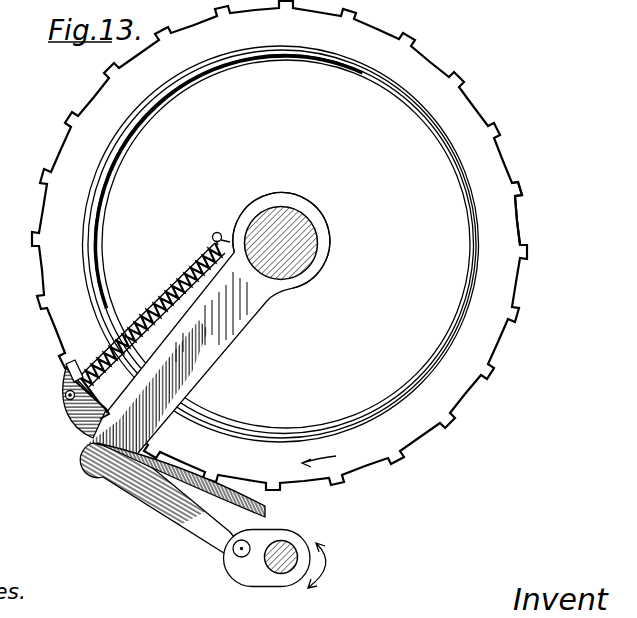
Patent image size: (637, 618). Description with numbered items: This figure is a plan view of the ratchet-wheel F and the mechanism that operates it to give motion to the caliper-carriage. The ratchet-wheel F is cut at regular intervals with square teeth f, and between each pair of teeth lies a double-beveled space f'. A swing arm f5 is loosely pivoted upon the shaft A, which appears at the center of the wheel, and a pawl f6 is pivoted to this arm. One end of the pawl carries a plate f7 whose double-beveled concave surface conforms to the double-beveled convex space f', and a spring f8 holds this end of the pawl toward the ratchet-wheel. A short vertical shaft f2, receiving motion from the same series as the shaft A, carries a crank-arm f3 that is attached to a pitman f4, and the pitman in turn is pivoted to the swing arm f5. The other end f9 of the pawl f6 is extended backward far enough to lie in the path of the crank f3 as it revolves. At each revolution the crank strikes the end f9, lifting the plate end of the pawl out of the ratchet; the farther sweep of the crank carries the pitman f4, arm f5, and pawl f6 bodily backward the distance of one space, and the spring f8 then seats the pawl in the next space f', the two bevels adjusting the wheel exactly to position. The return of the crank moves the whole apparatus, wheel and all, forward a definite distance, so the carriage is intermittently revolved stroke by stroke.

The shaft A is at (318, 232).
The ratchet-wheel F is at (470, 212).
The square teeth f is at (527, 187).
The double-beveled space f' is at (542, 220).
The short vertical shaft f2 is at (293, 548).
The crank-arm f3 is at (252, 558).
The pitman f4 is at (183, 512).
The swing arm f5 is at (210, 347).
The pawl f6 is at (86, 422).
The plate f7 is at (68, 370).
The spring f8 is at (148, 289).
The end of the pawl f9 is at (268, 509).